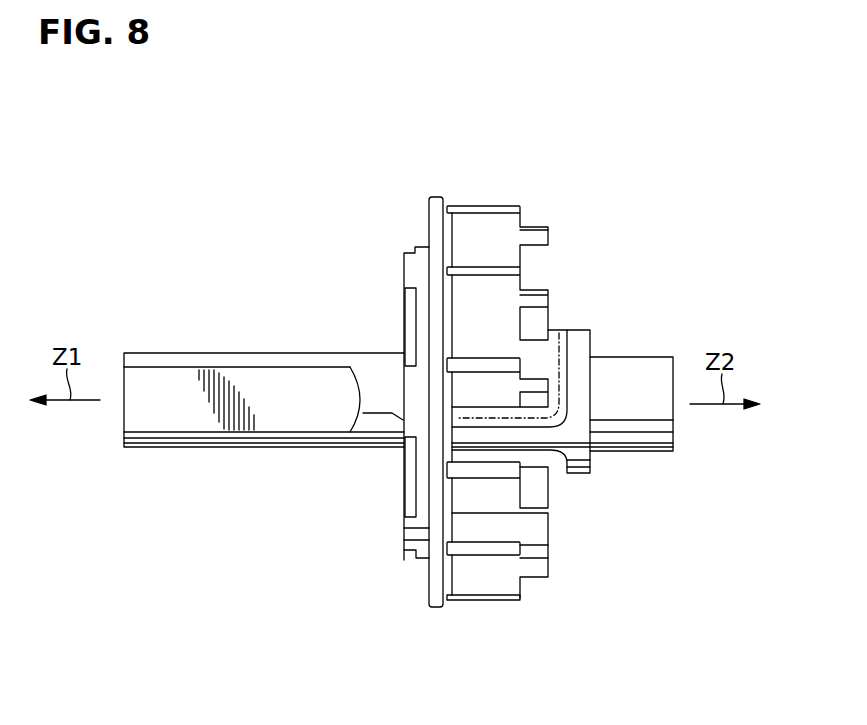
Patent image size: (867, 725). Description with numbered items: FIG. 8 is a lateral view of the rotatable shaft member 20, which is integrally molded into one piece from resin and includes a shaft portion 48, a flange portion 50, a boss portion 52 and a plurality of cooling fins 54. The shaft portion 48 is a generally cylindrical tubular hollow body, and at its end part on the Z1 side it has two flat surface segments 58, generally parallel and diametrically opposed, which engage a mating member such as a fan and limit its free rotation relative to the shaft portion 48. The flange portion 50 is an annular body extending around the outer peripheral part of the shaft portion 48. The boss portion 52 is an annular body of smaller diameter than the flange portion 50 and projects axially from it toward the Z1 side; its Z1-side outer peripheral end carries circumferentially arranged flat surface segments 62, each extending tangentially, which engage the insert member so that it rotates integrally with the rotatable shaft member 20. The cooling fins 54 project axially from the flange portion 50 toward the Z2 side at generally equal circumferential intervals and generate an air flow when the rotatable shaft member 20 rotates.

The rotatable shaft member 20 is at (403, 103).
The shaft portion 48 is at (253, 353).
The flange portion 50 is at (440, 196).
The boss portion 52 is at (403, 258).
The cooling fins 54 is at (573, 338).
The flat surface segments 58 is at (273, 418).
The flat surface segments 62 is at (405, 628).